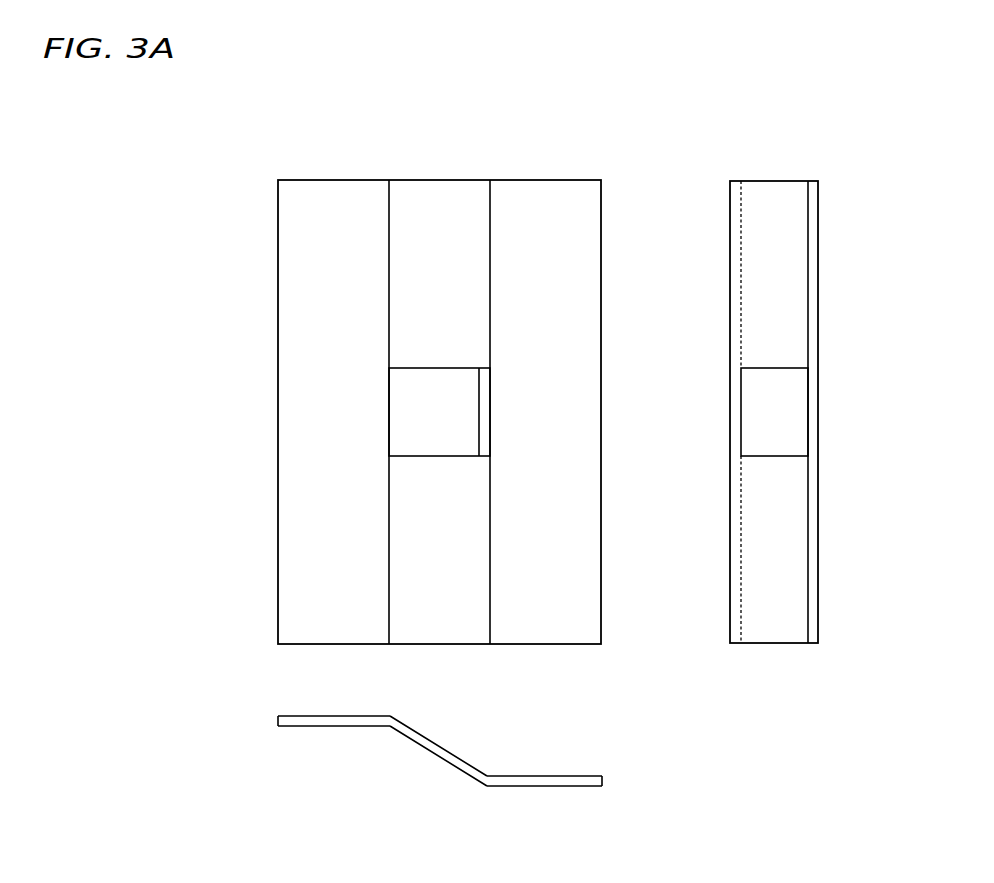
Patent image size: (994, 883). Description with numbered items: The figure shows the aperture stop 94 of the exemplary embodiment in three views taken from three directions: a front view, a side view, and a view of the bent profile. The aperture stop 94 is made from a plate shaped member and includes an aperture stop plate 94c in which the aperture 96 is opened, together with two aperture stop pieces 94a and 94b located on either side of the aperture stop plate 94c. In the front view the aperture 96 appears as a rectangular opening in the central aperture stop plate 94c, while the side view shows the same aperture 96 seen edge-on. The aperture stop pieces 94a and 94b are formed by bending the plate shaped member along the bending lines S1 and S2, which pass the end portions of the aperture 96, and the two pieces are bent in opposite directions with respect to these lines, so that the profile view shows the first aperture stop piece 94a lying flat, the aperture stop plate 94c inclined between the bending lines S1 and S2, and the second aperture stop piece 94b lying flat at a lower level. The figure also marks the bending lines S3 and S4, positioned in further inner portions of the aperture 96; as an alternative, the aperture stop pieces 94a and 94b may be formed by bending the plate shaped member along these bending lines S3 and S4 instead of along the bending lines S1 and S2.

The aperture stop 94 is at (638, 152).
The aperture stop piece 94a is at (300, 297).
The aperture stop piece 94b is at (577, 547).
The aperture stop plate 94c is at (453, 626).
The aperture 96 is at (422, 417).
The bending line S1 is at (389, 177).
The bending line S2 is at (490, 177).
The bending line S3 is at (398, 177).
The bending line S4 is at (479, 177).